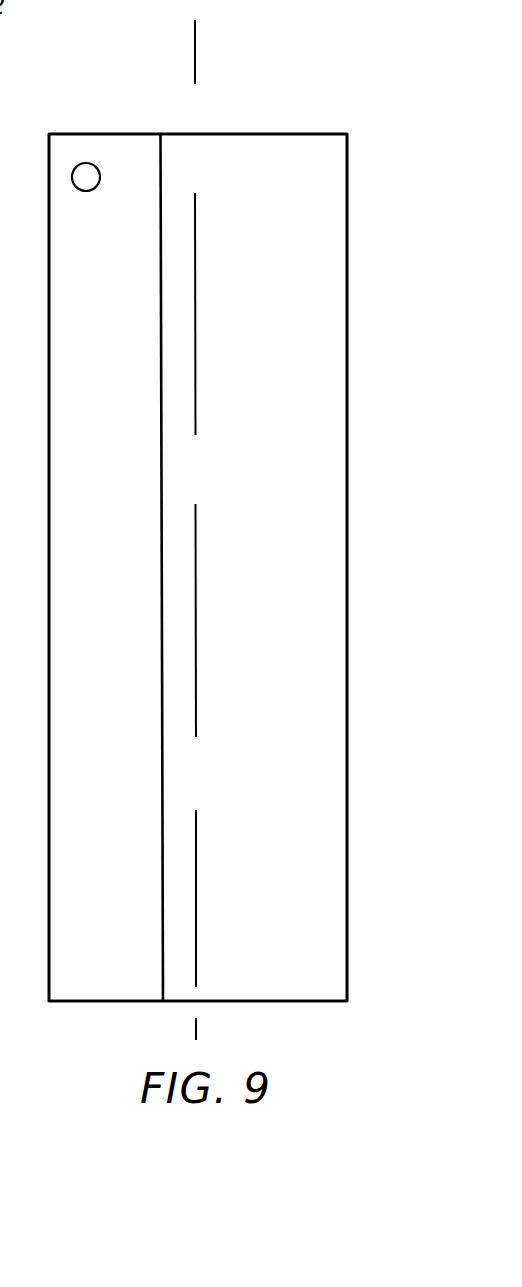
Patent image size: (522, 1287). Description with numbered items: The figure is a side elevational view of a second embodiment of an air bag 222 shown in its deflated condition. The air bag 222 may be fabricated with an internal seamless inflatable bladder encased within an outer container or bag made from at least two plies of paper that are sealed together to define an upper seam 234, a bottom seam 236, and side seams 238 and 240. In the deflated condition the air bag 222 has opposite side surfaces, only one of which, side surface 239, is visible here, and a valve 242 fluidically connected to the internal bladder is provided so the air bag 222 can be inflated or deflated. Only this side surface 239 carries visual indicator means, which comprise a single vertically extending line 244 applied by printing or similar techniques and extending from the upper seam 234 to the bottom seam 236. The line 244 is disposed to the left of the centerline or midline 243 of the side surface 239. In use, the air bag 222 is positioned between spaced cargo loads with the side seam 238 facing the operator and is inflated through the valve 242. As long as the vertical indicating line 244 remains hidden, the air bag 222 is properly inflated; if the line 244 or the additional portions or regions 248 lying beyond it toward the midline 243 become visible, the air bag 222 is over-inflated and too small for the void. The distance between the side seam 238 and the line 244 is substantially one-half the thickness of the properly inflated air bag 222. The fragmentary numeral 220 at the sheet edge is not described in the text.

The air bag 222 is at (325, 108).
The upper seam 234 is at (218, 134).
The bottom seam 236 is at (240, 1002).
The side seam 238 is at (48, 420).
The tag assembly 220 is at (12, 538).
The side seam 240 is at (347, 577).
The valve 242 is at (86, 166).
The centerline or midline 243 is at (196, 583).
The vertical indicating line 244 is at (161, 775).
The additional portions or regions 248 is at (177, 707).
The side surface 239 is at (280, 478).